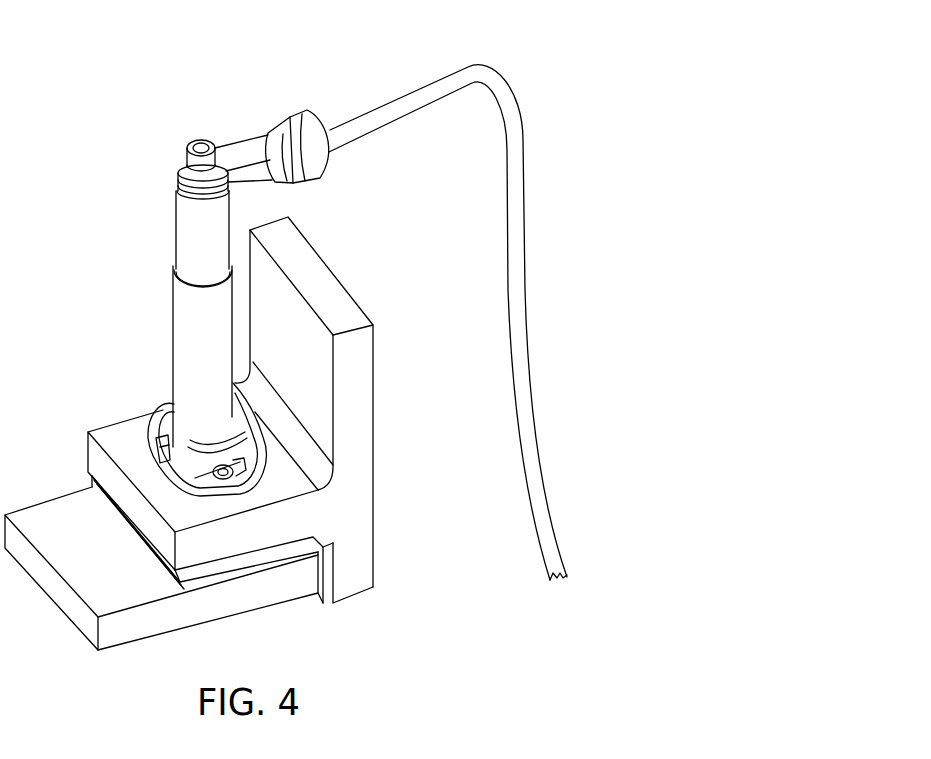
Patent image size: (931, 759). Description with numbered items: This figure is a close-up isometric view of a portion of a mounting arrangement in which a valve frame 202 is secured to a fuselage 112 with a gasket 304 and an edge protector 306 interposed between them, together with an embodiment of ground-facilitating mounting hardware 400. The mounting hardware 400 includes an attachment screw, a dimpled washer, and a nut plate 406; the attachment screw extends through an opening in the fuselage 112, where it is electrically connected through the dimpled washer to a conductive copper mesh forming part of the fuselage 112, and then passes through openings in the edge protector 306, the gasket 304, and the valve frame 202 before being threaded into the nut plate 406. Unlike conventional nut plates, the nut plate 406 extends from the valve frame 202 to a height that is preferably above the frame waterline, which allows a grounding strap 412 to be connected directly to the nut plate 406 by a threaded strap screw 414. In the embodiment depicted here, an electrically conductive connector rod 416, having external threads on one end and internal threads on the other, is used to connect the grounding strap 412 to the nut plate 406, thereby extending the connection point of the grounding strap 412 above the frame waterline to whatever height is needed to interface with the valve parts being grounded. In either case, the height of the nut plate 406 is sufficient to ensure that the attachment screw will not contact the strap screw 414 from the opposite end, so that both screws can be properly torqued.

The fuselage 112 is at (67, 622).
The valve frame 202 is at (377, 341).
The gasket 304 is at (318, 541).
The edge protector 306 is at (325, 584).
The ground-facilitating mounting hardware 400 is at (158, 297).
The nut plate 406 is at (136, 386).
The grounding strap 412 is at (478, 72).
The strap screw 414 is at (214, 139).
The connector rod 416 is at (176, 222).